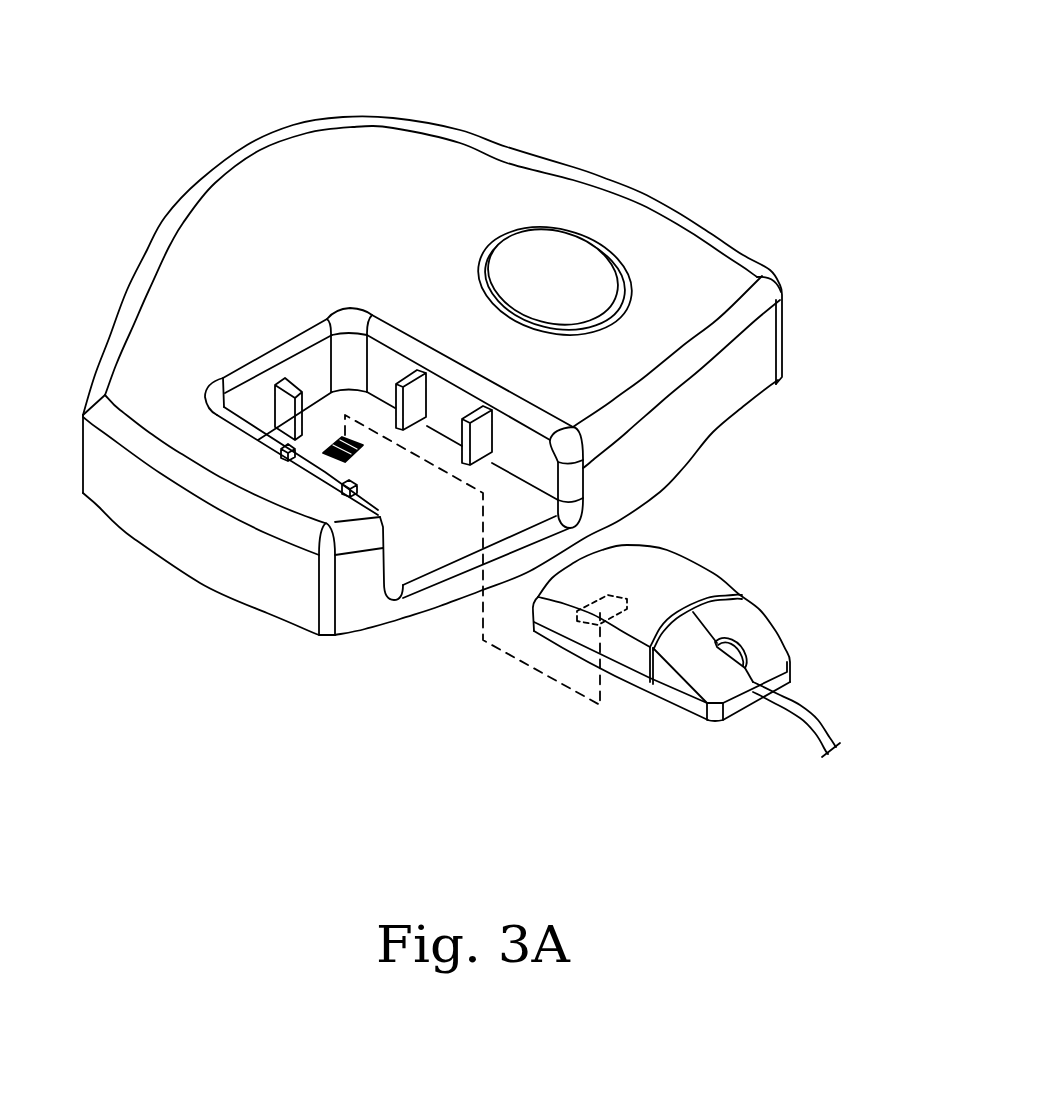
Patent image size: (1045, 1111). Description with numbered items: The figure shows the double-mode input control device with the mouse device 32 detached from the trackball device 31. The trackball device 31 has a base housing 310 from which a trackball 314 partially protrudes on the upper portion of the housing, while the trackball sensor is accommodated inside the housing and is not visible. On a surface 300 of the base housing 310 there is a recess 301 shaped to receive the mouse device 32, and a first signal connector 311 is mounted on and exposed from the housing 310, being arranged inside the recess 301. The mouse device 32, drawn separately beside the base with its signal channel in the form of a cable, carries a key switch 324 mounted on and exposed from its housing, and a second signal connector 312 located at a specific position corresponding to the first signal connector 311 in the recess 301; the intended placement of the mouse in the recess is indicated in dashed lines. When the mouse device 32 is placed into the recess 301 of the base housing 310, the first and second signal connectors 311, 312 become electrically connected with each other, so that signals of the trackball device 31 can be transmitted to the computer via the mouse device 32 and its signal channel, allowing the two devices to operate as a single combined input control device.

The surface 300 is at (687, 297).
The base housing 310 is at (397, 167).
The trackball device 31 is at (500, 227).
The trackball 314 is at (558, 257).
The recess 301 is at (430, 505).
The first signal connector 311 is at (340, 455).
The mouse device 32 is at (697, 587).
The key switch 324 is at (752, 647).
The second signal connector 312 is at (567, 650).